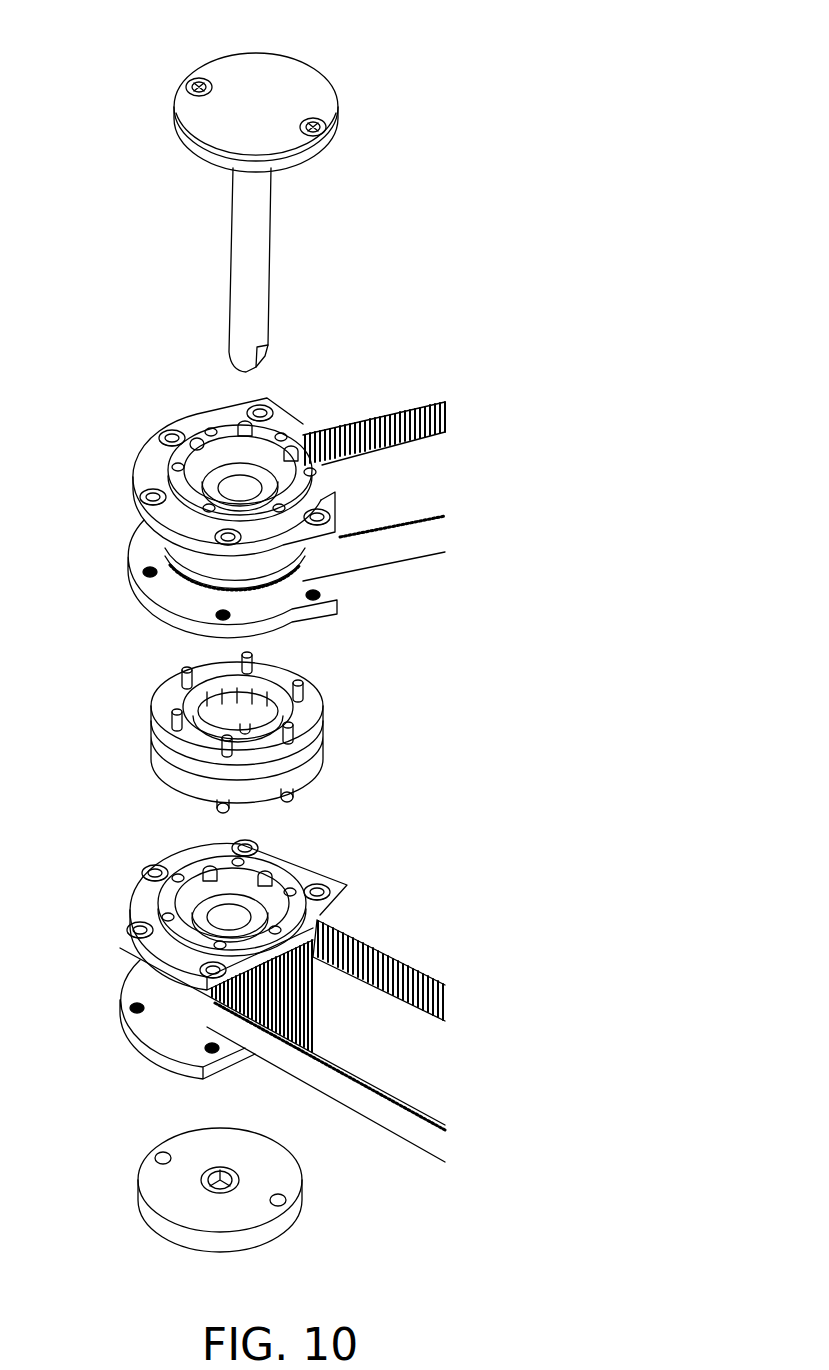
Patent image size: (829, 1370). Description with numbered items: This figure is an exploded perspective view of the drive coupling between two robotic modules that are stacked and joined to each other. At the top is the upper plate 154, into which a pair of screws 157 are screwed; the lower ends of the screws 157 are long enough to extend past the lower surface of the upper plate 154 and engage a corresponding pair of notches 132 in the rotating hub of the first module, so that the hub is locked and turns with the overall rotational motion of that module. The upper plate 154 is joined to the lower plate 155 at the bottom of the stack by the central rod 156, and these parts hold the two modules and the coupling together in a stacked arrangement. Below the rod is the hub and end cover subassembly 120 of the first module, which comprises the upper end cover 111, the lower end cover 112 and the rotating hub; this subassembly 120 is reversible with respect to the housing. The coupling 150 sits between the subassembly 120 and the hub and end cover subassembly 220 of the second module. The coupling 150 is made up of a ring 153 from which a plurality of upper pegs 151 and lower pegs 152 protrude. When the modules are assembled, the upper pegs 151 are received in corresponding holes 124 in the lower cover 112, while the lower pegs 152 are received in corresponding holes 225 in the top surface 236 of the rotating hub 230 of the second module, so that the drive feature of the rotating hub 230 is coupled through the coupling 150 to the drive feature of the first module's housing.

The upper plate 154 is at (338, 100).
The screws 157 is at (201, 78).
The central rod 156 is at (273, 248).
The hub and end cover subassembly 120 is at (251, 492).
The upper end cover 111 is at (150, 457).
The notches 132 is at (197, 440).
The lower end cover 112 is at (273, 617).
The holes 124 is at (223, 615).
The coupling 150 is at (249, 737).
The ring 153 is at (160, 738).
The upper pegs 151 is at (173, 714).
The lower pegs 152 is at (168, 783).
The hub and end cover subassembly 220 is at (247, 989).
The top surface 236 is at (177, 935).
The holes 225 is at (162, 916).
The rotating hub 230 is at (178, 952).
The lower plate 155 is at (278, 1225).